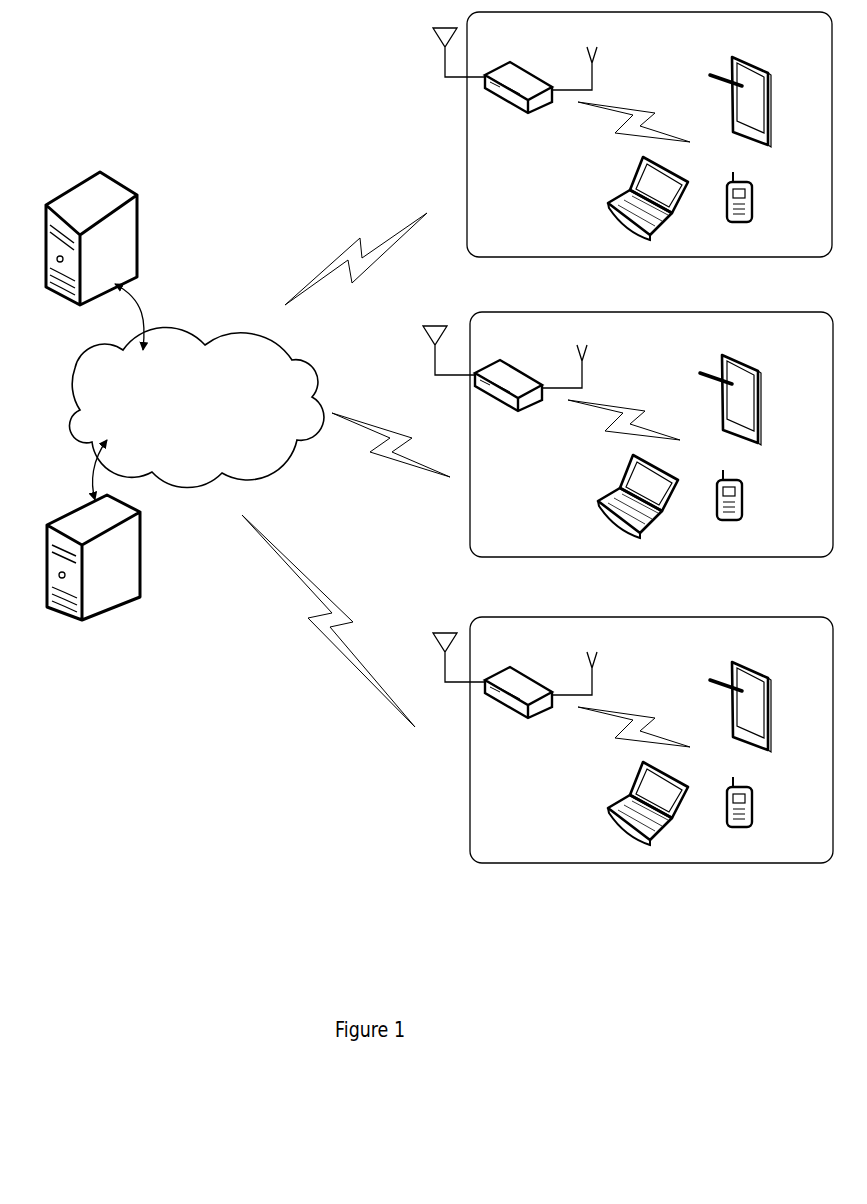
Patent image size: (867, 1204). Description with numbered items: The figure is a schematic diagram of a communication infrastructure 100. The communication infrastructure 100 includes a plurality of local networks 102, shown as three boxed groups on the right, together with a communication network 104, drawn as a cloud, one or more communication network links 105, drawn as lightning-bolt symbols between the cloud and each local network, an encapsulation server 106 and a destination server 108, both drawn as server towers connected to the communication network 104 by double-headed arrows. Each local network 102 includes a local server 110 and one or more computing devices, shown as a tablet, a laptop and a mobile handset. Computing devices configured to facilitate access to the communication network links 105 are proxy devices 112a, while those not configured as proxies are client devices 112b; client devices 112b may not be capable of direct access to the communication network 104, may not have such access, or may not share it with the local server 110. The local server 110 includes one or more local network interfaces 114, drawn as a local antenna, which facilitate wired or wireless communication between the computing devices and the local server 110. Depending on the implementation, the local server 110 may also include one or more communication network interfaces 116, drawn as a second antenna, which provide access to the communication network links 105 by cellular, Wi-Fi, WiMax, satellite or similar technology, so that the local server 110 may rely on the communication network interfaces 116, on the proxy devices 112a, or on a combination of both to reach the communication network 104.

The communication infrastructure 100 is at (158, 848).
The local network 102 is at (540, 250).
The communication network 104 is at (196, 392).
The communication network link 105 is at (346, 470).
The encapsulation server 106 is at (100, 171).
The destination server 108 is at (101, 618).
The local server 110 is at (527, 676).
The proxy device 112a is at (755, 817).
The client device 112b is at (773, 698).
The local network interface 114 is at (580, 660).
The communication network interface 116 is at (459, 642).